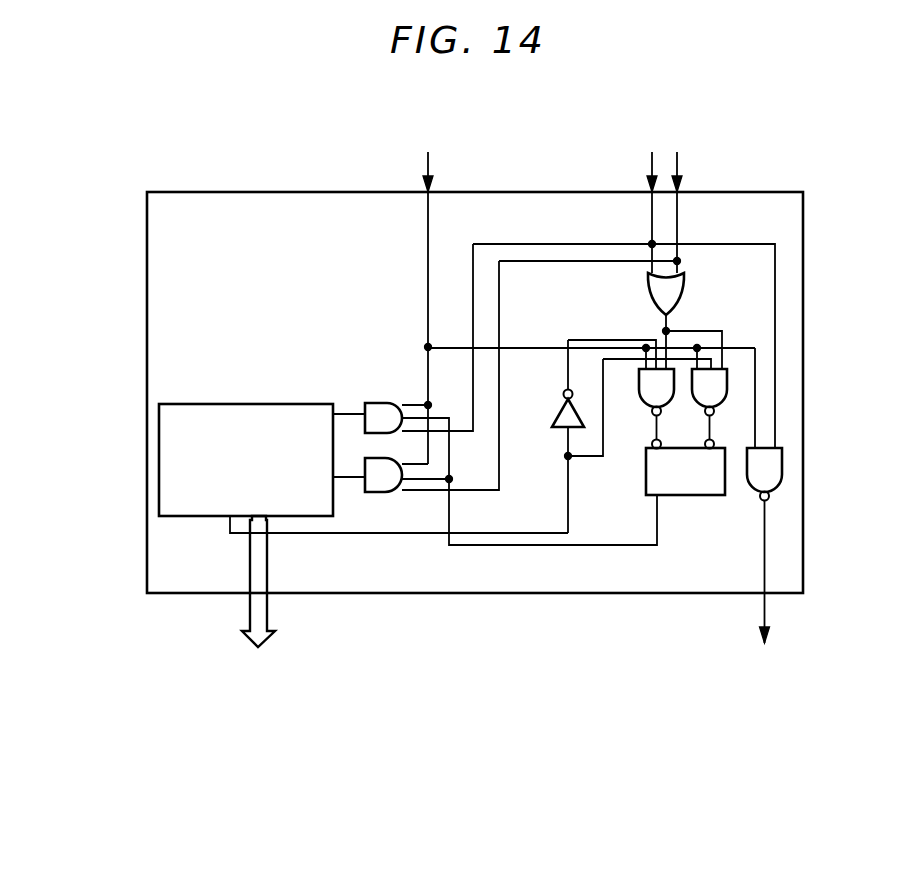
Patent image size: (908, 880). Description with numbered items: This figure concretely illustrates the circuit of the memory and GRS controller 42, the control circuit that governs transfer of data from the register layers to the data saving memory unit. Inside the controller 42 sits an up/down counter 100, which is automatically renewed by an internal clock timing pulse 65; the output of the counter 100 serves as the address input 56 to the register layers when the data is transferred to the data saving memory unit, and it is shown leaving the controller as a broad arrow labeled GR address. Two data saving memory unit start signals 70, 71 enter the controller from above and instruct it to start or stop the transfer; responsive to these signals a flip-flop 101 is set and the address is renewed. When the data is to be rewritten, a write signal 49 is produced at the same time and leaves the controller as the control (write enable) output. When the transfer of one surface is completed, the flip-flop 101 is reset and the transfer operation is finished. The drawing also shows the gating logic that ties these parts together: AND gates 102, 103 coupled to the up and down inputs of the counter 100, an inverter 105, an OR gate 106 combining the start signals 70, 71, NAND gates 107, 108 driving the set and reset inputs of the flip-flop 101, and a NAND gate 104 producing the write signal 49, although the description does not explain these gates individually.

The memory and GRS controller 42 is at (147, 265).
The internal clock timing pulse 65 is at (429, 163).
The data saving memory unit start signal 70 is at (650, 165).
The data saving memory unit start signal 71 is at (679, 167).
The up/down counter 100 is at (268, 404).
The flip-flop 101 is at (685, 497).
The AND gate (up) 102 is at (380, 404).
The AND gate (down) 103 is at (388, 494).
The NAND gate (write enable) 104 is at (748, 483).
The inverter 105 is at (560, 410).
The OR gate 106 is at (685, 286).
The NAND gate (set) 107 is at (641, 395).
The NAND gate (reset) 108 is at (728, 385).
The address input 56 is at (267, 612).
The write signal 49 is at (763, 617).